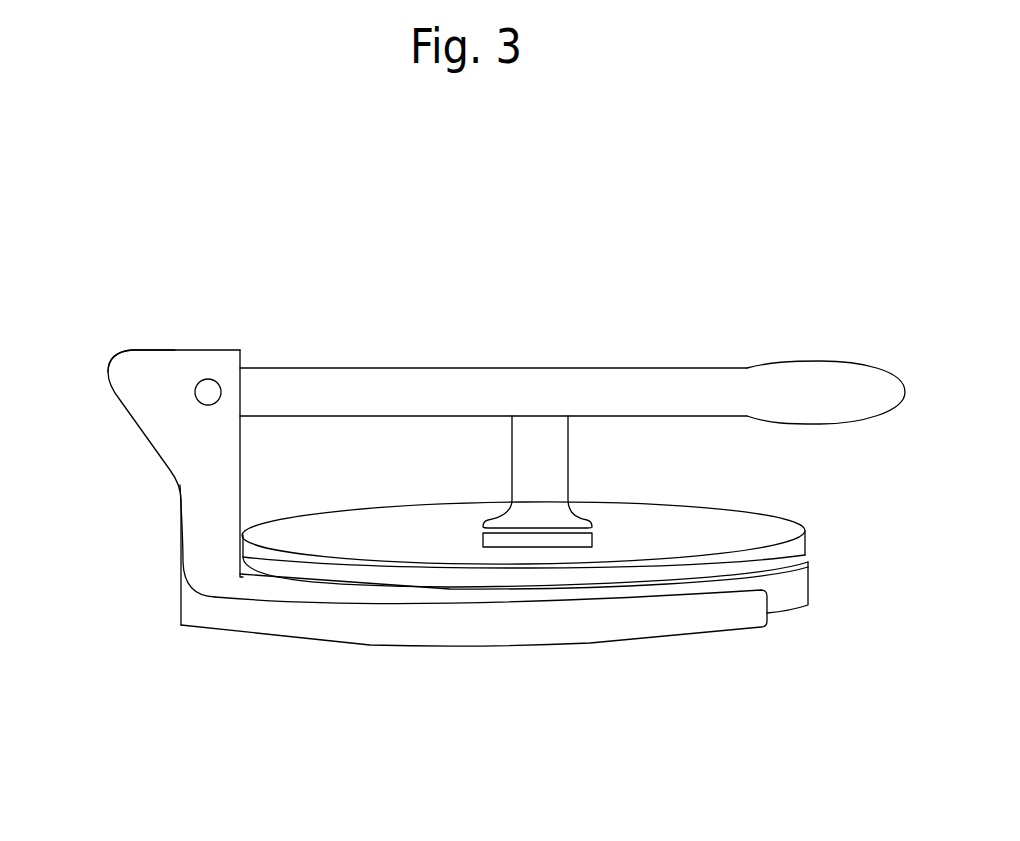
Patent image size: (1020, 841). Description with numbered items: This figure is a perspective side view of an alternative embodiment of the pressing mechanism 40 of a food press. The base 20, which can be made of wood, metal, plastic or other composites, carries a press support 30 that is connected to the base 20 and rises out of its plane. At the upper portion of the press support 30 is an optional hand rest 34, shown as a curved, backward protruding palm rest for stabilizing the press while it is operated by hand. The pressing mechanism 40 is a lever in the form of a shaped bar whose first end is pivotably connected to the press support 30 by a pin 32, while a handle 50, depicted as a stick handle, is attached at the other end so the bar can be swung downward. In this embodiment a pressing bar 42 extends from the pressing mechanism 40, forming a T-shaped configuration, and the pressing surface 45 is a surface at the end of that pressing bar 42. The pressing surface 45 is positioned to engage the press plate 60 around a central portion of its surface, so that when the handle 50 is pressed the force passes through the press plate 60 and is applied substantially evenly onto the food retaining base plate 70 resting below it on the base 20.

The base 20 is at (590, 644).
The press support 30 is at (142, 450).
The pin 32 is at (207, 390).
The hand rest 34 is at (125, 352).
The pressing mechanism 40 is at (497, 323).
The pressing bar 42 is at (495, 478).
The pressing surface 45 is at (536, 550).
The handle 50 is at (826, 352).
The press plate 60 is at (755, 512).
The food retaining base plate 70 is at (810, 582).